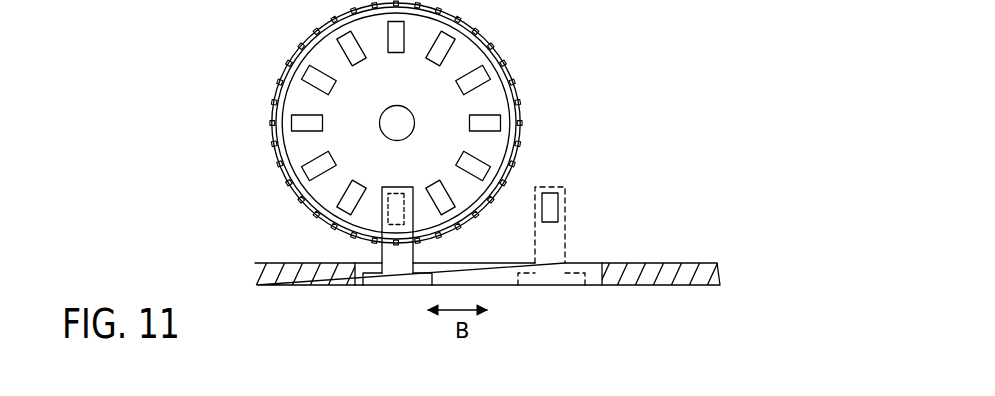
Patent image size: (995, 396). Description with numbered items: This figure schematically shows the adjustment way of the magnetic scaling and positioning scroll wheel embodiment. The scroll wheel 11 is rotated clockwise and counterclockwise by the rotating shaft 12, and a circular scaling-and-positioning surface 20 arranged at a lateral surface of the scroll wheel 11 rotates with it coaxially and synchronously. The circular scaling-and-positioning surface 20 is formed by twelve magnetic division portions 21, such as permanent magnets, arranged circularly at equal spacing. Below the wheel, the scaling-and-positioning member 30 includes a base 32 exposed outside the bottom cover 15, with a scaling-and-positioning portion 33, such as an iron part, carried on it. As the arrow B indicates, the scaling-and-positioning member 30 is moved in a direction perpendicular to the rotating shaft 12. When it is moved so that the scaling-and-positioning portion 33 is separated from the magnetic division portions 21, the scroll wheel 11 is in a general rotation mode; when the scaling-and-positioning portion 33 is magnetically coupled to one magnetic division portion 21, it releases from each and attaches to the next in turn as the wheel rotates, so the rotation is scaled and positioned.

The scroll wheel 11 is at (279, 66).
The rotating shaft 12 is at (399, 122).
The circular scaling-and-positioning surface 20 is at (509, 133).
The magnetic division portion 21 is at (484, 125).
The bottom cover 15 is at (688, 263).
The scaling-and-positioning portion 33 is at (383, 202).
The base 32 is at (371, 286).
The scaling-and-positioning member 30 is at (386, 290).